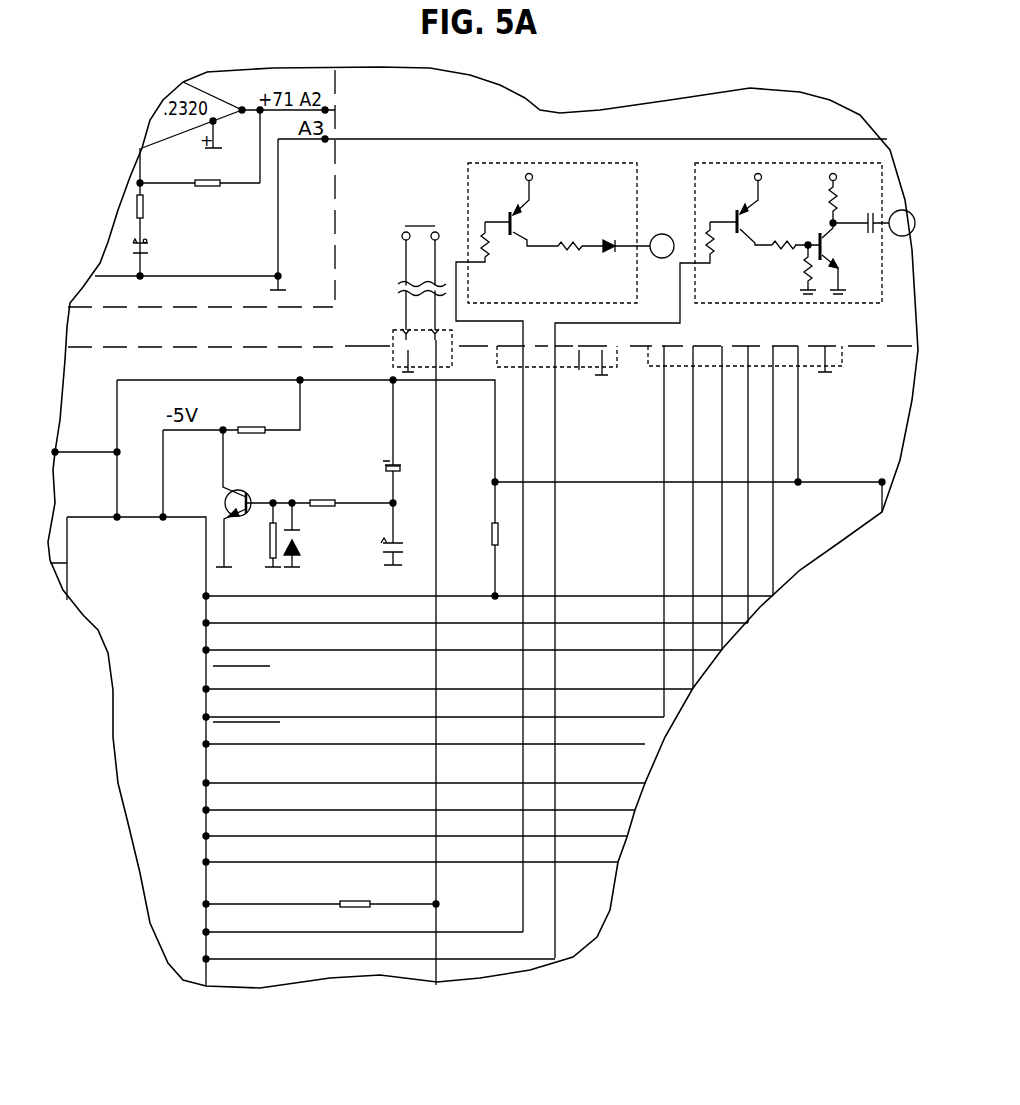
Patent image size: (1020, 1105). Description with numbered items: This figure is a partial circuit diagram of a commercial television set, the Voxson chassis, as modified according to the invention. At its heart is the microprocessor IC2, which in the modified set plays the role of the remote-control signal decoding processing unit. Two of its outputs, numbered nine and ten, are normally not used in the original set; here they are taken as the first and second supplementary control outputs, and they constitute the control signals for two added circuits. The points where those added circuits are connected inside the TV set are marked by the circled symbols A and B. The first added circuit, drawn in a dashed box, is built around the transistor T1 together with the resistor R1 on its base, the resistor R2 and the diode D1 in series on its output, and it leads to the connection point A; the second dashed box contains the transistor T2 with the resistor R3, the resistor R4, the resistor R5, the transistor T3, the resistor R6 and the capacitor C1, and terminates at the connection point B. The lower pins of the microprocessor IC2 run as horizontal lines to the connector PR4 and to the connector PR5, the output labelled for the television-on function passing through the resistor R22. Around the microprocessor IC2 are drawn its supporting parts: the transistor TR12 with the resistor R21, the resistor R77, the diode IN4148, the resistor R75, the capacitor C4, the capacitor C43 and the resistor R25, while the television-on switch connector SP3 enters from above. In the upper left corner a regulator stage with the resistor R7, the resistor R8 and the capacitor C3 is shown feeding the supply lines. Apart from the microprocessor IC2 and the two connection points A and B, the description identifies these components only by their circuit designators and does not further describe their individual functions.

The resistor R7 is at (162, 213).
The resistor R8 is at (216, 209).
The capacitor C3 is at (166, 255).
The TV on switch connector SP3 is at (409, 590).
The transistor T1 is at (552, 233).
The resistor R1 is at (489, 577).
The resistor R2 is at (580, 232).
The diode D1 is at (625, 232).
The connection point A is at (662, 246).
The transistor T2 is at (788, 233).
The resistor R3 is at (646, 590).
The resistor R4 is at (796, 231).
The resistor R5 is at (797, 269).
The transistor T3 is at (835, 257).
The resistor R6 is at (839, 196).
The capacitor C1 is at (861, 233).
The connection point B is at (902, 223).
The connector PR4 is at (555, 348).
The connector PR5 is at (780, 531).
The resistor R21 is at (252, 429).
The microprocessor IC2 is at (411, 728).
The transistor BC548C TR12 is at (222, 498).
The resistor R77 is at (256, 535).
The diode IN4148 is at (328, 535).
The resistor R75 is at (333, 482).
The capacitor C4 is at (378, 441).
The capacitor C43 is at (408, 537).
The resistor R25 is at (476, 537).
The resistor R22 is at (355, 904).